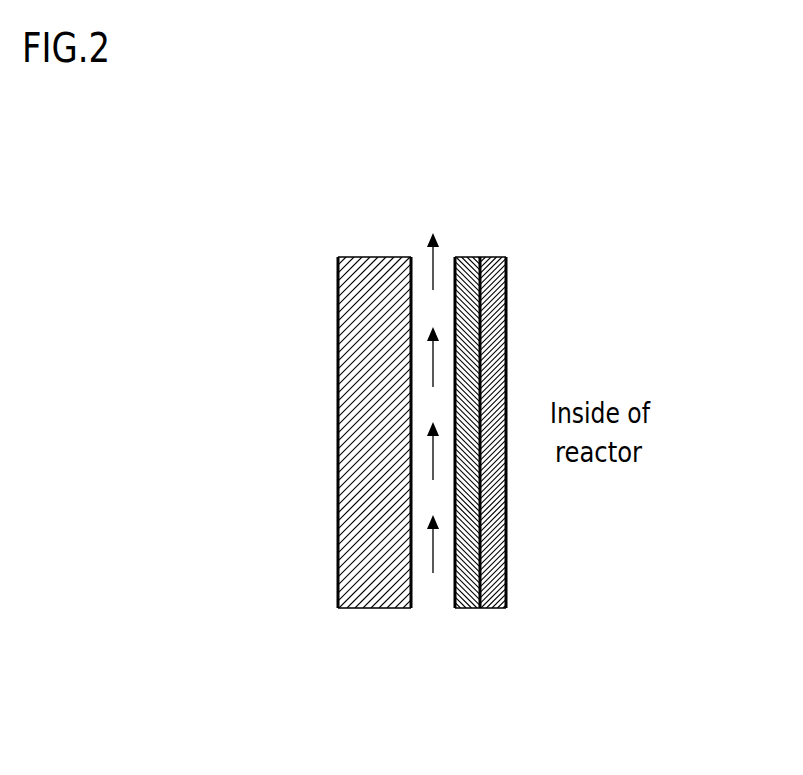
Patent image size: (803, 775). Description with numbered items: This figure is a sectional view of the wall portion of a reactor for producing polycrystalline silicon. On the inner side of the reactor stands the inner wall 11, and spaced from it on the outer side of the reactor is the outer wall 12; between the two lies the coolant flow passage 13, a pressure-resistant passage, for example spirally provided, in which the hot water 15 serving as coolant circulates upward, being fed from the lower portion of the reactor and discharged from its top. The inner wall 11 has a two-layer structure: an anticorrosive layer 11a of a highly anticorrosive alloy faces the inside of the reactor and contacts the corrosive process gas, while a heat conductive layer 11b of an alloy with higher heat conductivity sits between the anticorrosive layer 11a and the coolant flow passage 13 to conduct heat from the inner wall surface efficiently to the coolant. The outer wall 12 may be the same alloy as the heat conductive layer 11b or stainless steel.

The inner wall 11 is at (453, 508).
The anticorrosive layer 11a is at (493, 608).
The heat conductive layer 11b is at (470, 608).
The outer wall 12 is at (375, 608).
The coolant flow passage 13 is at (433, 601).
The hot water 15 is at (430, 360).